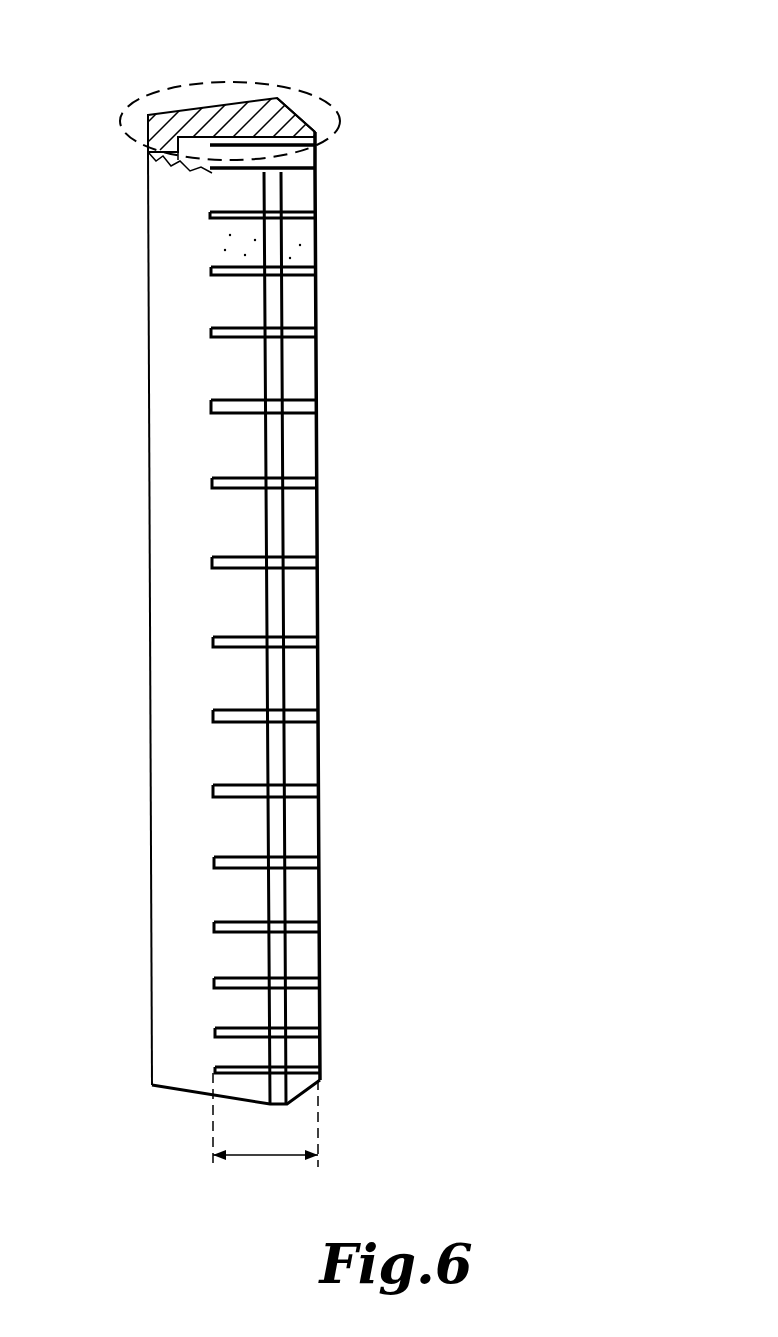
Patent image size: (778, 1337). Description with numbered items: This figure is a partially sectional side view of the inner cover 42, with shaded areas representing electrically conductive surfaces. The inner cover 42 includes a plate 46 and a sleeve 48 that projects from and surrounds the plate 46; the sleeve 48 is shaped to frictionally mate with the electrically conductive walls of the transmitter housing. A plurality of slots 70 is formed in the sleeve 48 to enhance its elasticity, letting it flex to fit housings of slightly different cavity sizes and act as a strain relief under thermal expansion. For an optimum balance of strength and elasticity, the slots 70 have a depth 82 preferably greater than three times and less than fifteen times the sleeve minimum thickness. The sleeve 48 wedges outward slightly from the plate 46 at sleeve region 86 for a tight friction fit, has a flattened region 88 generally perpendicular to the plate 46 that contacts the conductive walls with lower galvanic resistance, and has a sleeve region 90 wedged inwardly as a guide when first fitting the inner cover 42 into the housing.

The inner cover 42 is at (168, 855).
The plate 46 is at (148, 370).
The sleeve 48 is at (247, 247).
The slots 70 is at (322, 563).
The depth 82 is at (253, 1157).
The sleeve region 86 is at (193, 110).
The flattened region 88 is at (263, 100).
The sleeve region 90 is at (298, 116).